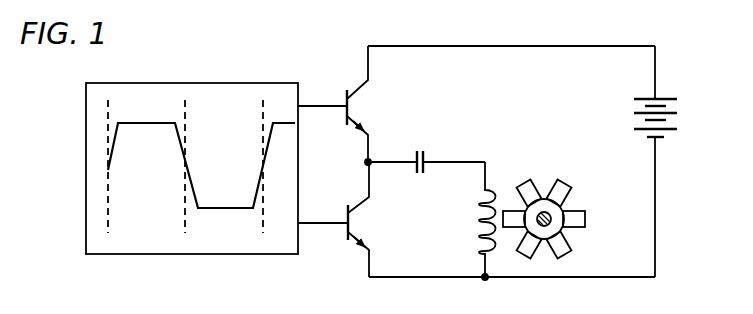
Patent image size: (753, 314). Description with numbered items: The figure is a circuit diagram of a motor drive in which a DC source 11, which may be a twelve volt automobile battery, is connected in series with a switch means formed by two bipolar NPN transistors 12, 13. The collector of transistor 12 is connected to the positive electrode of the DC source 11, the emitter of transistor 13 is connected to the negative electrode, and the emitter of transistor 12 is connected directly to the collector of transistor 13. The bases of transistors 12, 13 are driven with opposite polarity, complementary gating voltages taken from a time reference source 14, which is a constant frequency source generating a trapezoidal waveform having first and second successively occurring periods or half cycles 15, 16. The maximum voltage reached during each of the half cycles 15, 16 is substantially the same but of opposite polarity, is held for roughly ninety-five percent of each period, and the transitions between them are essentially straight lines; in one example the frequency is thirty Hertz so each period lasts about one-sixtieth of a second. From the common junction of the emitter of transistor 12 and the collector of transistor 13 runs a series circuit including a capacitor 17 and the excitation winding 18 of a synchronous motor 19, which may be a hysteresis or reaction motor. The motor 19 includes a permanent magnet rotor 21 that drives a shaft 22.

The DC source 11 is at (672, 131).
The transistor 12 is at (366, 103).
The transistor 13 is at (368, 223).
The time reference source 14 is at (222, 90).
The first half cycle 15 is at (149, 92).
The second half cycle 16 is at (210, 233).
The capacitor 17 is at (424, 155).
The excitation winding 18 is at (479, 233).
The synchronous motor 19 is at (554, 218).
The permanent magnet rotor 21 is at (531, 182).
The shaft 22 is at (546, 226).